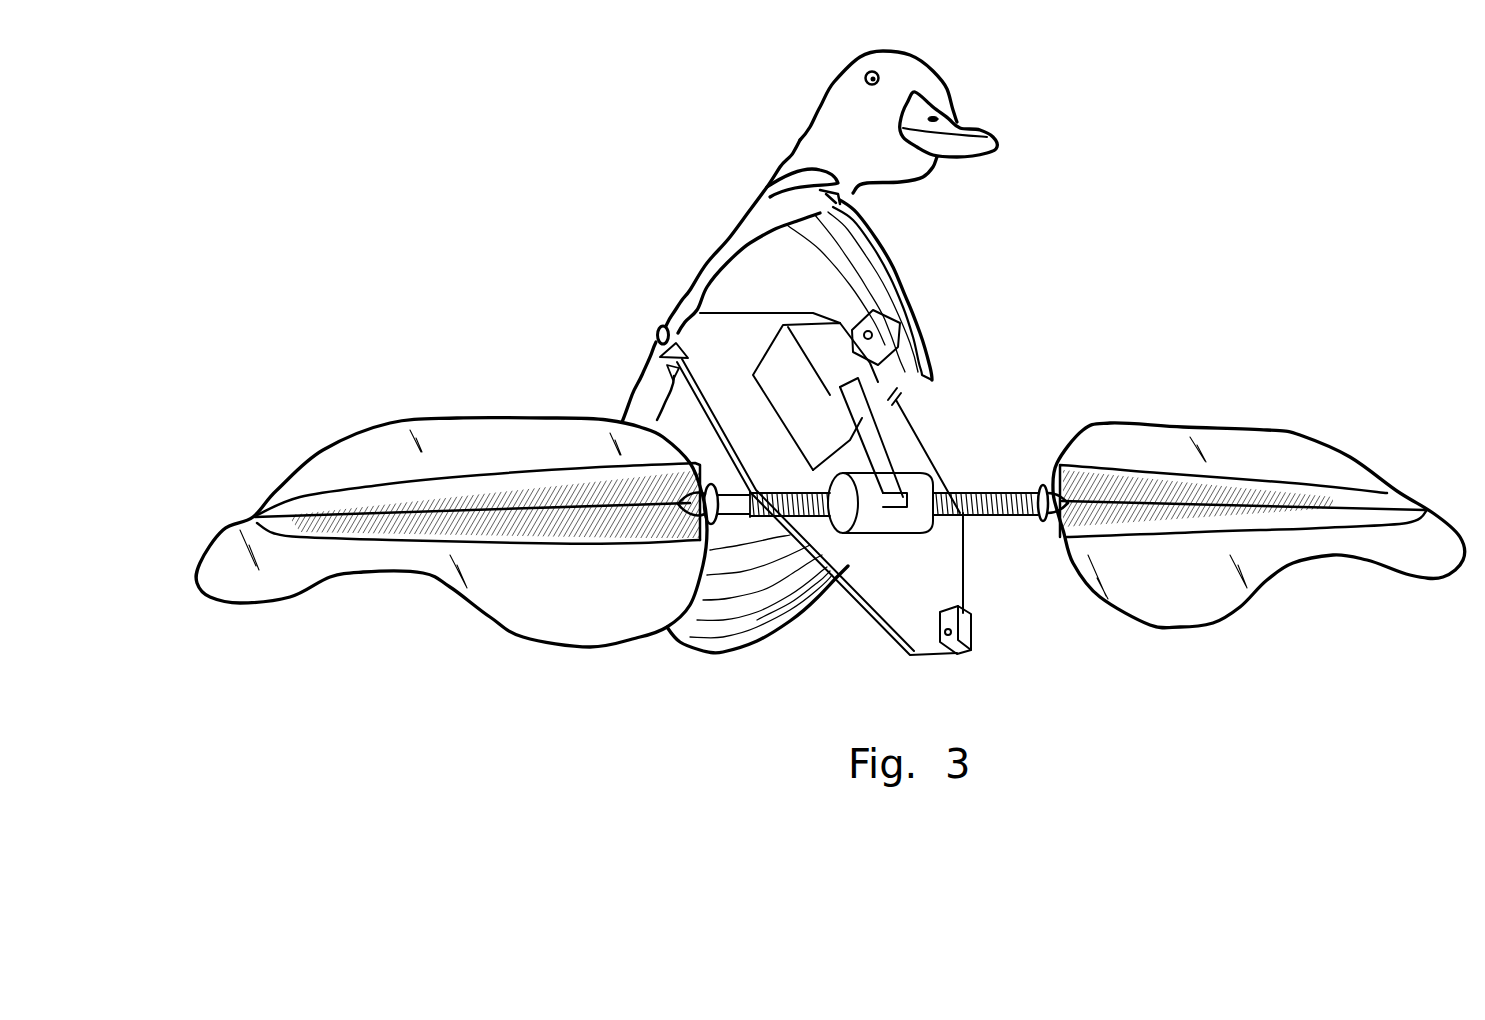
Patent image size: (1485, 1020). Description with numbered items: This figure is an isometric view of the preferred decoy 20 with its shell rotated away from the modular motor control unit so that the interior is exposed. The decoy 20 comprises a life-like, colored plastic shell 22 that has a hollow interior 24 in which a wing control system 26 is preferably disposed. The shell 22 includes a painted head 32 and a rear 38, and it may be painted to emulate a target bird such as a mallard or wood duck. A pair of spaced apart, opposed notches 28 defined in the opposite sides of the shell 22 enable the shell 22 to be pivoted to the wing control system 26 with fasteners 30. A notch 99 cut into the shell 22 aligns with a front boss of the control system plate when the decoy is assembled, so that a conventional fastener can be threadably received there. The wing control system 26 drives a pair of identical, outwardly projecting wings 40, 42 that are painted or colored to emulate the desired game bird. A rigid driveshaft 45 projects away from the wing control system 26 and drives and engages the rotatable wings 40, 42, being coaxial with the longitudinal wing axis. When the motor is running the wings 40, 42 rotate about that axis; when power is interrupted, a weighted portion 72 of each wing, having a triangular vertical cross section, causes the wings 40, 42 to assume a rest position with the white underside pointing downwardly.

The decoy 20 is at (576, 191).
The decoy shell 22 is at (905, 245).
The hollow interior 24 is at (885, 300).
The wing control system 26 is at (958, 437).
The notches 28 is at (672, 372).
The fasteners 30 is at (660, 330).
The painted head 32 is at (840, 103).
The rear 38 is at (728, 652).
The wing 40 is at (451, 573).
The wing 42 is at (1210, 612).
The driveshaft 45 is at (984, 525).
The weighted portion 72 is at (268, 514).
The notch 99 is at (897, 203).